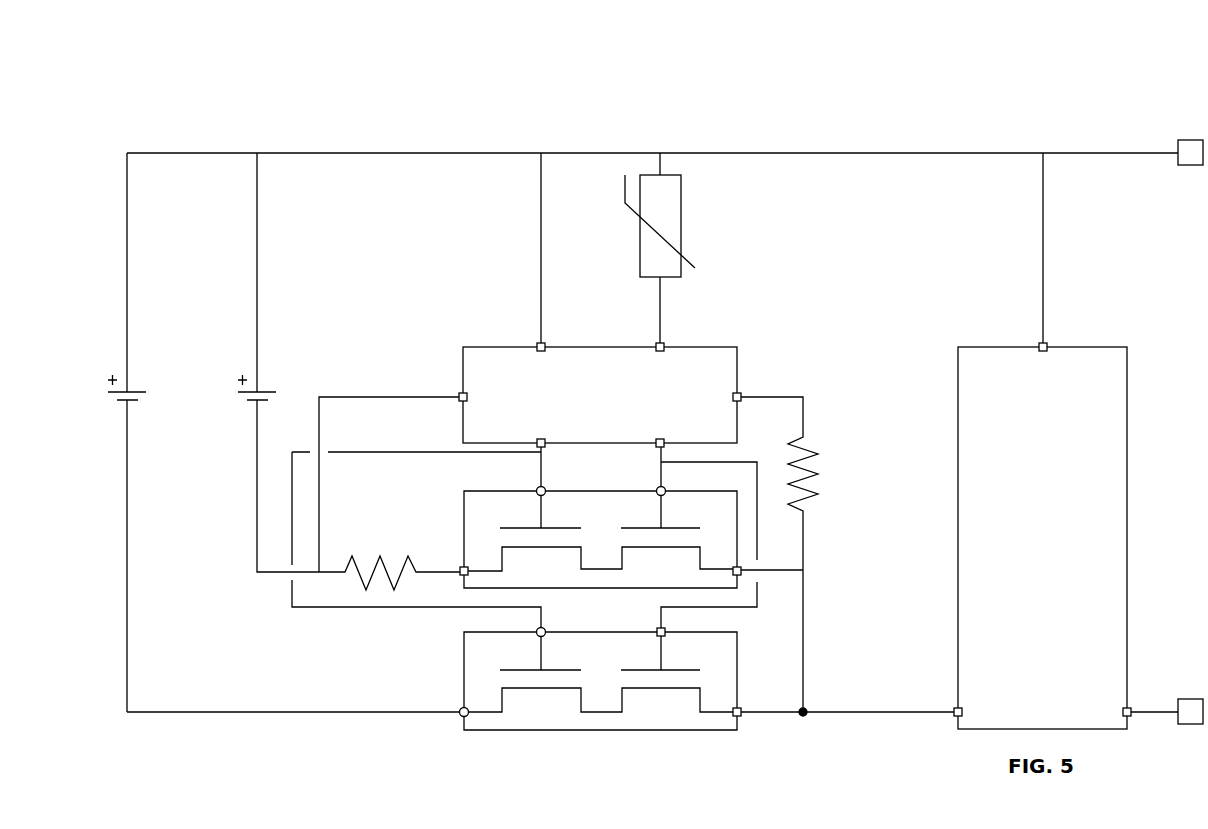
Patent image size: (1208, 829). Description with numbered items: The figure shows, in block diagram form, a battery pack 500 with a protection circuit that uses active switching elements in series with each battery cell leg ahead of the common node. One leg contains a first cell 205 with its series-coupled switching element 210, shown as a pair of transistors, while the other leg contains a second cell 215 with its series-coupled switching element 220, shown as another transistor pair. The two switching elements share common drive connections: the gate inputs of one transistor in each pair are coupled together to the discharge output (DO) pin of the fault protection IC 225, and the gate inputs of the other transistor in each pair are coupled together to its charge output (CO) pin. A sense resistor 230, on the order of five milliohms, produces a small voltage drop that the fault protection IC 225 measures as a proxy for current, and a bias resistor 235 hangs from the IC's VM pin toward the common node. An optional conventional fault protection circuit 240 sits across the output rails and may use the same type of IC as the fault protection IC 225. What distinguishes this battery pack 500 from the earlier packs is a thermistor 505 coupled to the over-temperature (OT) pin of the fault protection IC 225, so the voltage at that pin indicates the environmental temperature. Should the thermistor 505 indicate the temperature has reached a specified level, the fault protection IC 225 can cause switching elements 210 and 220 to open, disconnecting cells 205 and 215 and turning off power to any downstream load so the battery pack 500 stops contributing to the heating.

The battery pack 500 is at (306, 104).
The cell-1 205 is at (134, 381).
The cell-2 215 is at (264, 381).
The fault protection IC 225 is at (463, 347).
The switching element 220 is at (464, 492).
The switching element 210 is at (464, 667).
The sense resistor 230 is at (402, 555).
The bias resistor 235 is at (834, 572).
The fault protection circuit 240 is at (958, 347).
The thermistor 505 is at (682, 226).